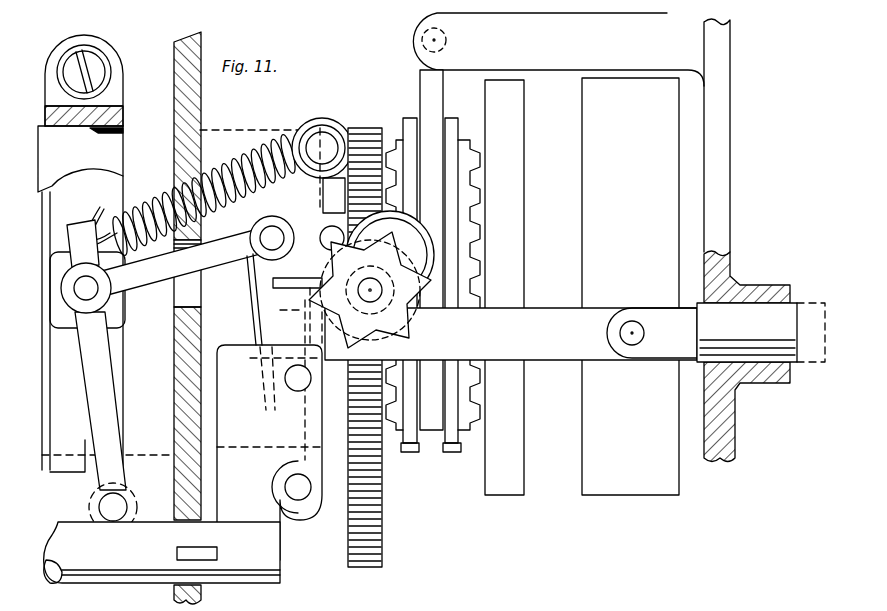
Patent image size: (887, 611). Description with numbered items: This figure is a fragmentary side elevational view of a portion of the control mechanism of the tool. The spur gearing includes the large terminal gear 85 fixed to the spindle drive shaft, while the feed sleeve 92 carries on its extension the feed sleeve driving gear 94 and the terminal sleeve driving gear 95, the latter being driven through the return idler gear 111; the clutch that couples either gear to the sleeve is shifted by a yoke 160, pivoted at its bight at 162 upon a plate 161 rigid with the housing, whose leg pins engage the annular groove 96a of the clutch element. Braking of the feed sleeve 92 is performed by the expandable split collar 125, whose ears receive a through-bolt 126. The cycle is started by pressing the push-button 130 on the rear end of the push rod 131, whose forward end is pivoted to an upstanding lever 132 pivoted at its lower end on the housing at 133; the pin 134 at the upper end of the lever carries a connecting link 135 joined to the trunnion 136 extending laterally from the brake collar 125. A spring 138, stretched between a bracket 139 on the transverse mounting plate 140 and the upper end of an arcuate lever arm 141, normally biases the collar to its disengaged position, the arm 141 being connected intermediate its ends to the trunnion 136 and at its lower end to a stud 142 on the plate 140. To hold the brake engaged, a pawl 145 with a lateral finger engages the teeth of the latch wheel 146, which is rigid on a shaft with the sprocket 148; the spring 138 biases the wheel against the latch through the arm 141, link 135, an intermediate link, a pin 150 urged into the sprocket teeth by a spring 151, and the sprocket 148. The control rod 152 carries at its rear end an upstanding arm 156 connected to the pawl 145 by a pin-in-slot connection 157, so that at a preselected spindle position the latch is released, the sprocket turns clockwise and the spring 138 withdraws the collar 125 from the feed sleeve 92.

The terminal gear 85 is at (586, 125).
The feed sleeve 92 is at (140, 150).
The feed sleeve driving gear 94 is at (520, 130).
The terminal sleeve driving gear 95 is at (366, 128).
The annular groove 96a is at (450, 444).
The return idler gear 111 is at (380, 556).
The brake collar 125 is at (100, 45).
The through-bolt 126 is at (93, 72).
The push-button 130 is at (720, 82).
The push rod 131 is at (560, 350).
The upstanding lever 132 is at (252, 298).
The pivot 133 is at (299, 502).
The pin 134 is at (262, 238).
The connecting link 135 is at (224, 254).
The trunnion 136 is at (100, 298).
The spring 138 is at (250, 142).
The bracket 139 is at (311, 118).
The transverse mounting plate 140 is at (196, 83).
The arcuate lever arm 141 is at (105, 385).
The stud 142 is at (115, 492).
The pawl 145 is at (304, 337).
The latch wheel 146 is at (414, 336).
The sprocket 148 is at (302, 222).
The pin 150 is at (332, 226).
The spring 151 is at (440, 215).
The control rod 152 is at (262, 575).
The upstanding arm 156 is at (280, 542).
The pin-in-slot connection 157 is at (280, 382).
The yoke 160 is at (438, 110).
The plate 161 is at (683, 48).
The pivot 162 is at (452, 50).